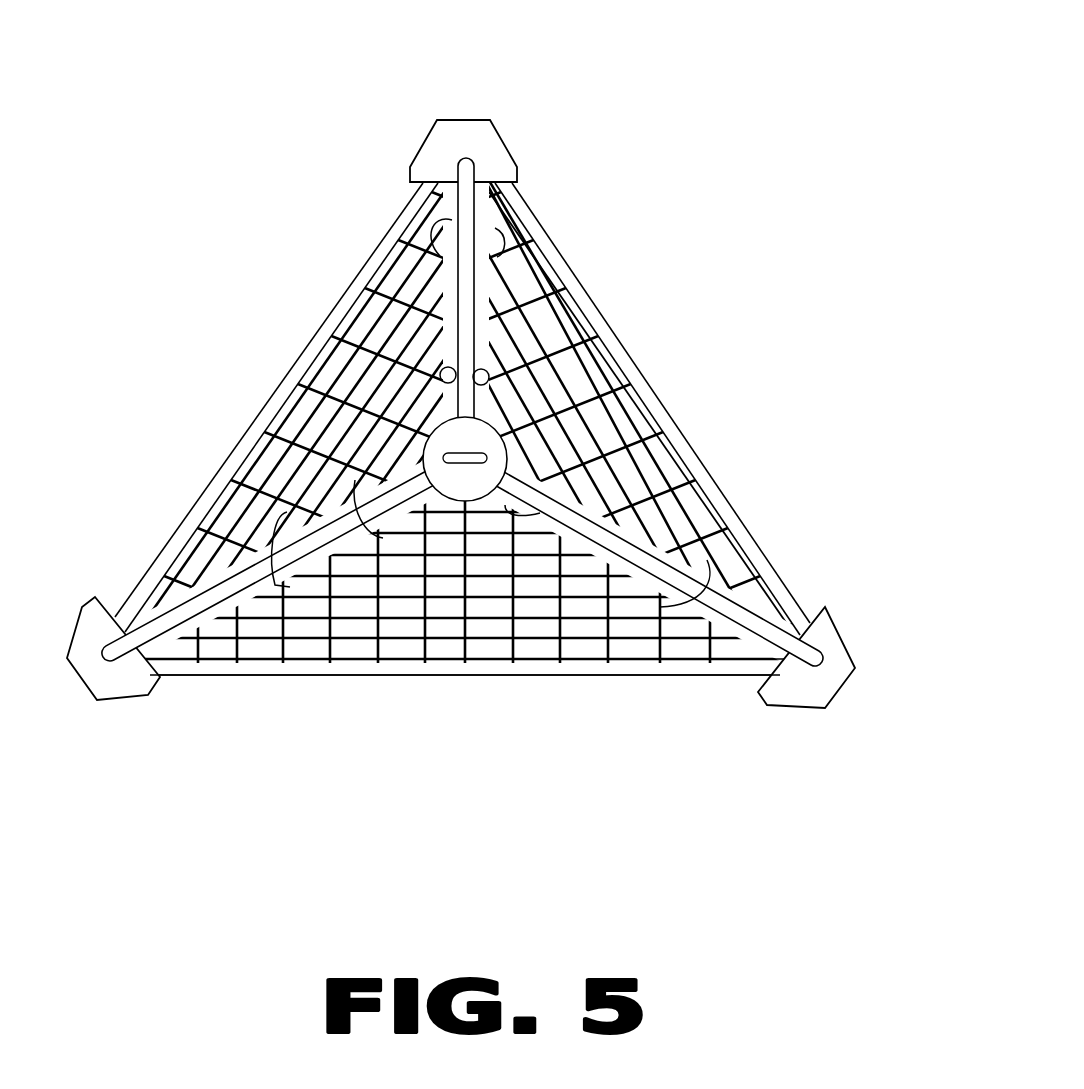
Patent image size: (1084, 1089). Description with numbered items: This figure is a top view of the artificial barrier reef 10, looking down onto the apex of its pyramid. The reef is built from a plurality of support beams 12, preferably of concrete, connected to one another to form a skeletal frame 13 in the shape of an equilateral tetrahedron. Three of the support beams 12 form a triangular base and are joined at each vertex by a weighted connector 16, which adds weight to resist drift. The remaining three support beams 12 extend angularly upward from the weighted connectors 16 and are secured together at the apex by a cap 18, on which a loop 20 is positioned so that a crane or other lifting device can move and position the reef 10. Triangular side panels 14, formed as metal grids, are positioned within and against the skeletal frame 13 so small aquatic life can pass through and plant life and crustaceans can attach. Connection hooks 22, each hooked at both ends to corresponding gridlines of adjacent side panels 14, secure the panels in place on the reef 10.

The artificial barrier reef 10 is at (693, 172).
The support beam 12 is at (514, 205).
The skeletal frame 13 is at (605, 688).
The side panel 14 is at (514, 240).
The weighted connector 16 is at (462, 132).
The cap 18 is at (440, 433).
The loop 20 is at (488, 366).
The connection hook 22 is at (486, 374).